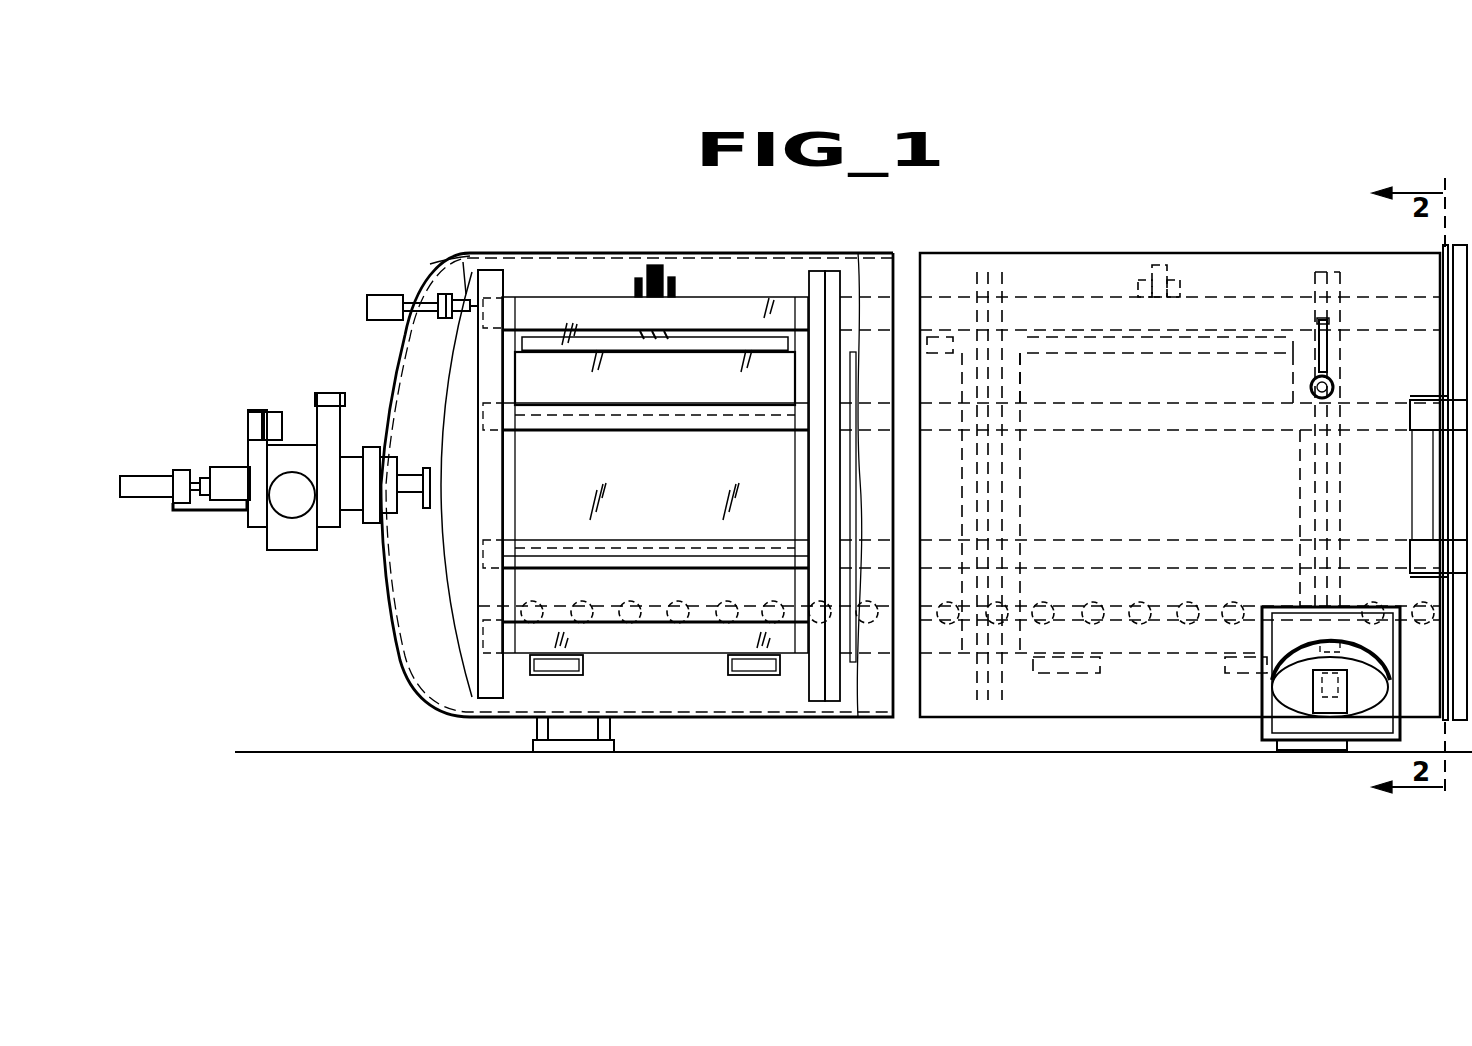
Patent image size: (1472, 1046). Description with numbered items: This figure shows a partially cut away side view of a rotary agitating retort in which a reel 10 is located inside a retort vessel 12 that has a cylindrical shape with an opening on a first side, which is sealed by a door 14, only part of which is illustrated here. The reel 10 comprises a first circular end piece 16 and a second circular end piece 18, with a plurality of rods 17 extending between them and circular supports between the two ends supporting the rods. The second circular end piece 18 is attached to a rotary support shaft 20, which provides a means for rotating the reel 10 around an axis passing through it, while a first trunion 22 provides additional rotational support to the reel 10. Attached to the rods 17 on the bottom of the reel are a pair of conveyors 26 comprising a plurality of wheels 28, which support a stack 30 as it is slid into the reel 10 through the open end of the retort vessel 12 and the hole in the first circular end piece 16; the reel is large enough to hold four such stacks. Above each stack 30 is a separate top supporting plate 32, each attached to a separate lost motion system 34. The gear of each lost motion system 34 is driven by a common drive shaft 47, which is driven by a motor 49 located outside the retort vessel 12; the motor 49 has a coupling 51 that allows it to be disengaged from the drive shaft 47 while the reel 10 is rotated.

The reel 10 is at (585, 288).
The retort vessel 12 is at (530, 252).
The door 14 is at (1460, 358).
The first circular end piece 16 is at (1336, 270).
The rods 17 is at (688, 432).
The second circular end piece 18 is at (487, 272).
The rotary support shaft 20 is at (415, 505).
The first trunion 22 is at (1333, 735).
The conveyors 26 is at (702, 620).
The wheels 28 is at (667, 621).
The stack 30 is at (777, 388).
The top supporting plate 32 is at (706, 345).
The lost motion system 34 is at (675, 294).
The drive shaft 47 is at (463, 294).
The motor 49 is at (377, 307).
The coupling 51 is at (440, 268).